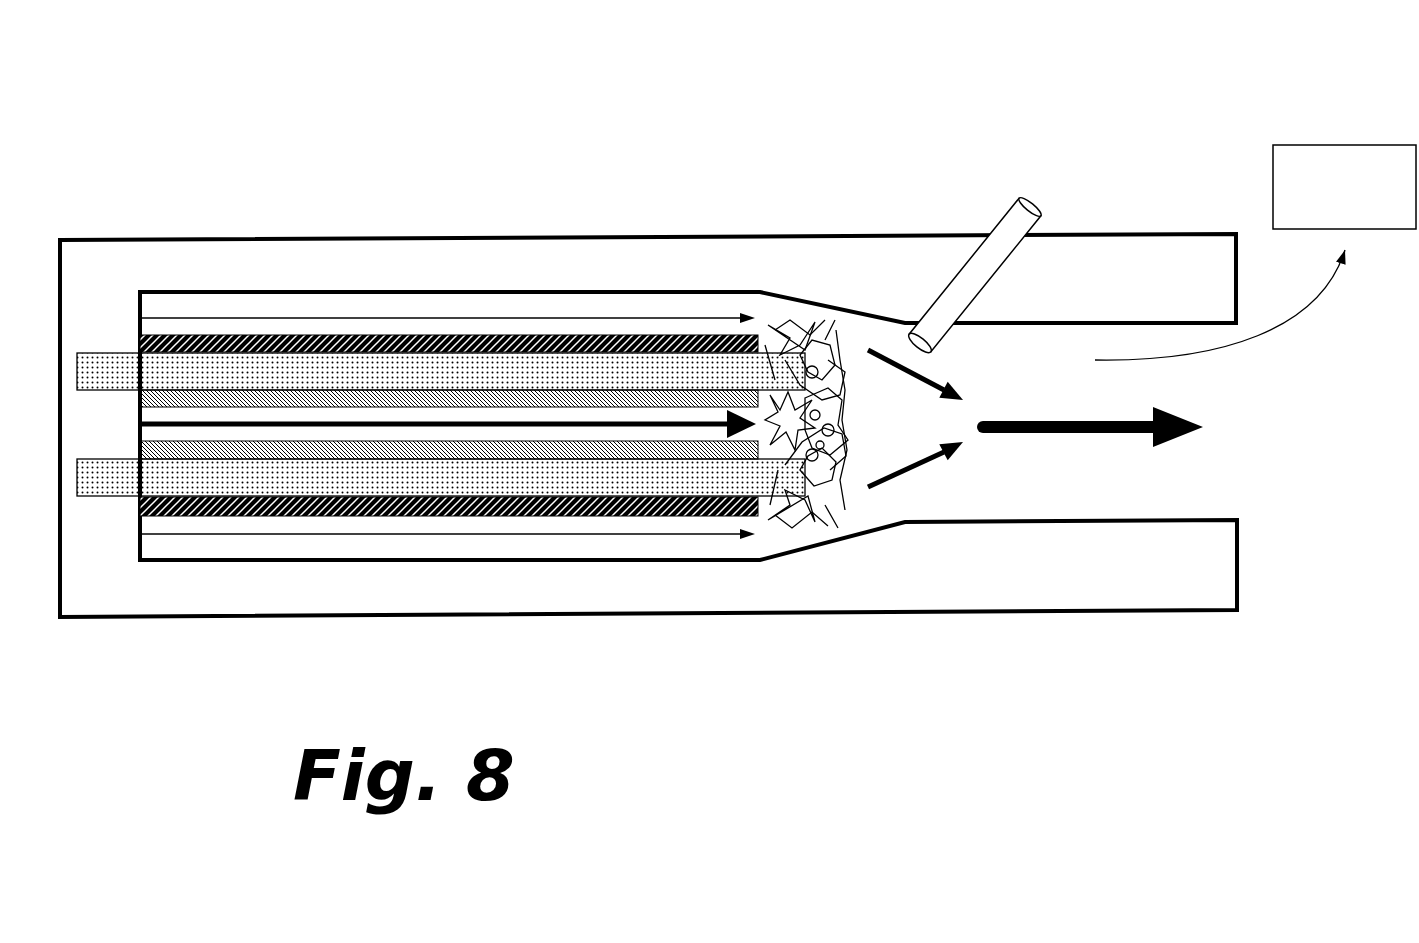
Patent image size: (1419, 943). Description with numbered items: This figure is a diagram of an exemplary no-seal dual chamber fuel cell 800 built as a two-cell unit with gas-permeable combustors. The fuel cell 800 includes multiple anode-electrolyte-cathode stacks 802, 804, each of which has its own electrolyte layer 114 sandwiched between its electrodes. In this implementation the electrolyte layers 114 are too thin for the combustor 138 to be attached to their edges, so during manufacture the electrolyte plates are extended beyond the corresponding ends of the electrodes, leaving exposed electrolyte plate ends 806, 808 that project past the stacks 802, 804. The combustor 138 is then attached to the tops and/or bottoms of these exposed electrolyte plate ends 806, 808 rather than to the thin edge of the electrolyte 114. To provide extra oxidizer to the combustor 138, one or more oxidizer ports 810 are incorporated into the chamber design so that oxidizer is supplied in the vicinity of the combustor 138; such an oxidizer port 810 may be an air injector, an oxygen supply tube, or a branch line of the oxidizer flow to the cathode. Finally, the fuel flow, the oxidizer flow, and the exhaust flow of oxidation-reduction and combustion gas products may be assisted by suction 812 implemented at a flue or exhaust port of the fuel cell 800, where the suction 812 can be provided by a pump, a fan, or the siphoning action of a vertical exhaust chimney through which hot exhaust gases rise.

The no-seal dual chamber fuel cell 800 is at (284, 92).
The anode-electrolyte-cathode stack 802 is at (613, 330).
The anode-electrolyte-cathode stack 804 is at (613, 518).
The electrolyte plate end 806 is at (783, 367).
The electrolyte plate end 808 is at (783, 472).
The oxidizer port 810 is at (1042, 188).
The suction 812 is at (1327, 215).
The combustor 138 is at (830, 424).
The electrolyte layer 114 is at (538, 488).